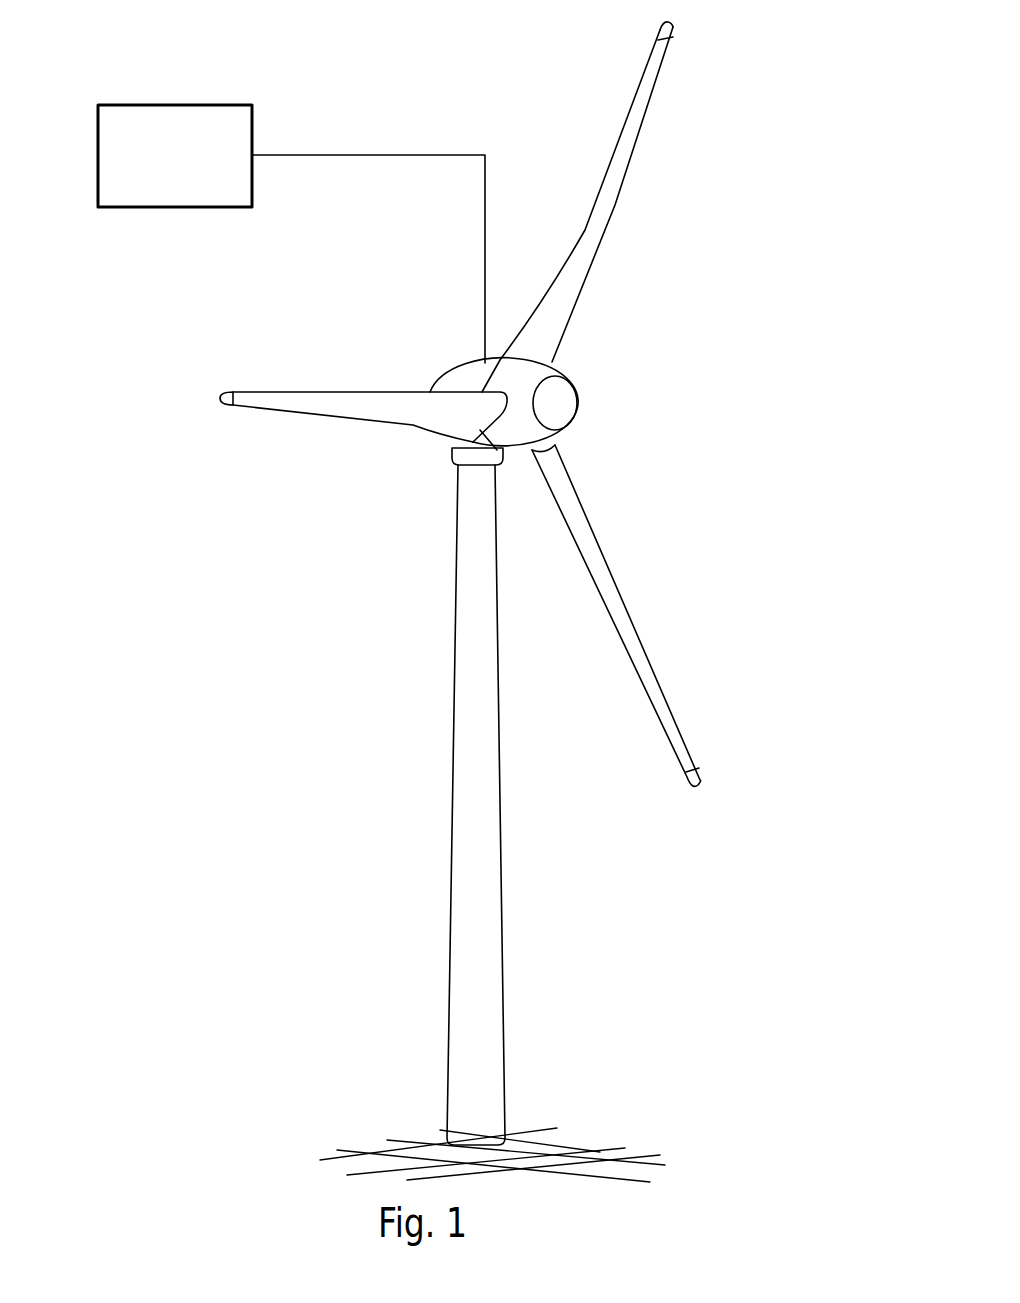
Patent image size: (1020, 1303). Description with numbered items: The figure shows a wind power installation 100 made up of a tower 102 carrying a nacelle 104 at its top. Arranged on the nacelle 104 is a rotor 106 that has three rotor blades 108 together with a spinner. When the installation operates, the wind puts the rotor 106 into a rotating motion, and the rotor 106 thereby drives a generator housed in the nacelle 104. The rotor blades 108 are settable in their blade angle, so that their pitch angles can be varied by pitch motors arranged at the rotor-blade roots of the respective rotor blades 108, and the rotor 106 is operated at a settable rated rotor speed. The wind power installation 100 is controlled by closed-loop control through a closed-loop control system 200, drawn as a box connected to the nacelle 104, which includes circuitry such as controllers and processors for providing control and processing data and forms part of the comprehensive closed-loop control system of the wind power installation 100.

The wind power installation 100 is at (412, 533).
The tower 102 is at (483, 908).
The nacelle 104 is at (470, 378).
The rotor 106 is at (643, 327).
The rotor blades 108 is at (285, 397).
The closed-loop control system 200 is at (135, 185).